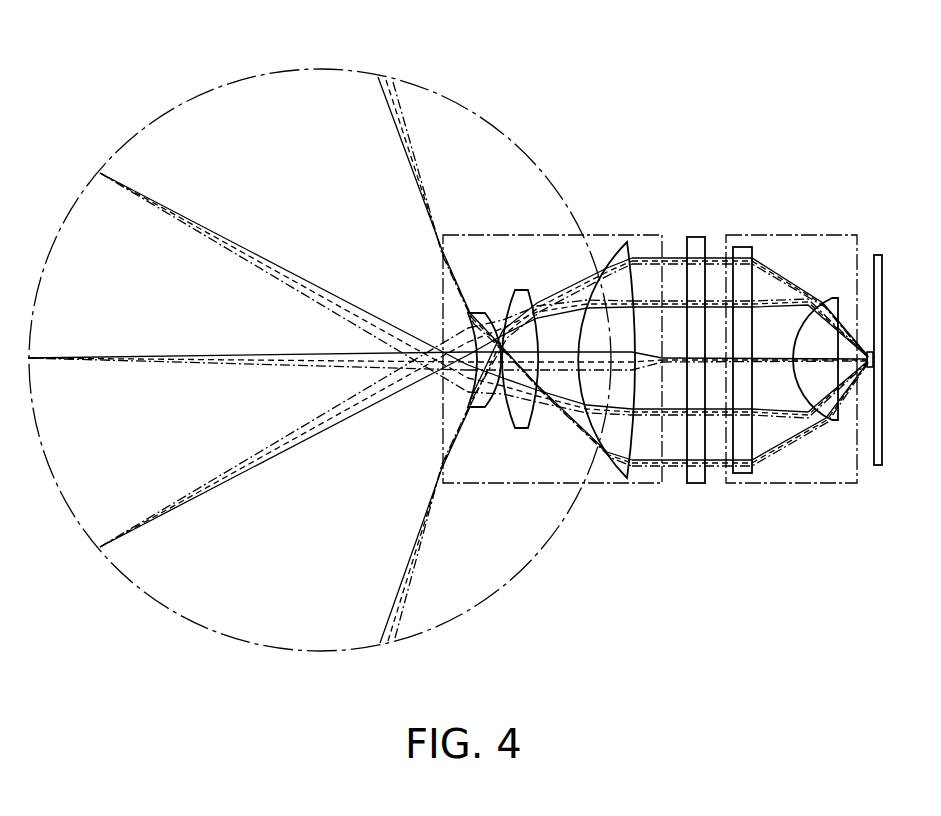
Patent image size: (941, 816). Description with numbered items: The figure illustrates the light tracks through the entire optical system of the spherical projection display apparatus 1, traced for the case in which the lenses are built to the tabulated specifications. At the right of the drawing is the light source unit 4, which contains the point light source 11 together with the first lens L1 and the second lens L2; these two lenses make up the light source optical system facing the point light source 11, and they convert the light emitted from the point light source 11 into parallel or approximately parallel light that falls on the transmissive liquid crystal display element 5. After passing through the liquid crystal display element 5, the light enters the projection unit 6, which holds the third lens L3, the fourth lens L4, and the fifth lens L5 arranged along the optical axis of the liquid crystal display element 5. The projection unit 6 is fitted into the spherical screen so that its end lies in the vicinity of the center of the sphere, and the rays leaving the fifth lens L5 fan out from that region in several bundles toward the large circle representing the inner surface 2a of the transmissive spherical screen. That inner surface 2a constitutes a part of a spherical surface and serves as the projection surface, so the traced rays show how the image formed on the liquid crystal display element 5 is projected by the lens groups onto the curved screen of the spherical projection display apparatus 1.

The spherical projection display apparatus 1 is at (574, 90).
The inner surface 2a is at (432, 90).
The light source unit 4 is at (788, 235).
The transmissive liquid crystal display element 5 is at (697, 237).
The projection unit 6 is at (606, 235).
The point light source 11 is at (870, 368).
The first lens L1 is at (831, 421).
The second lens L2 is at (743, 474).
The third lens L3 is at (622, 480).
The fourth lens L4 is at (521, 429).
The fifth lens L5 is at (475, 407).